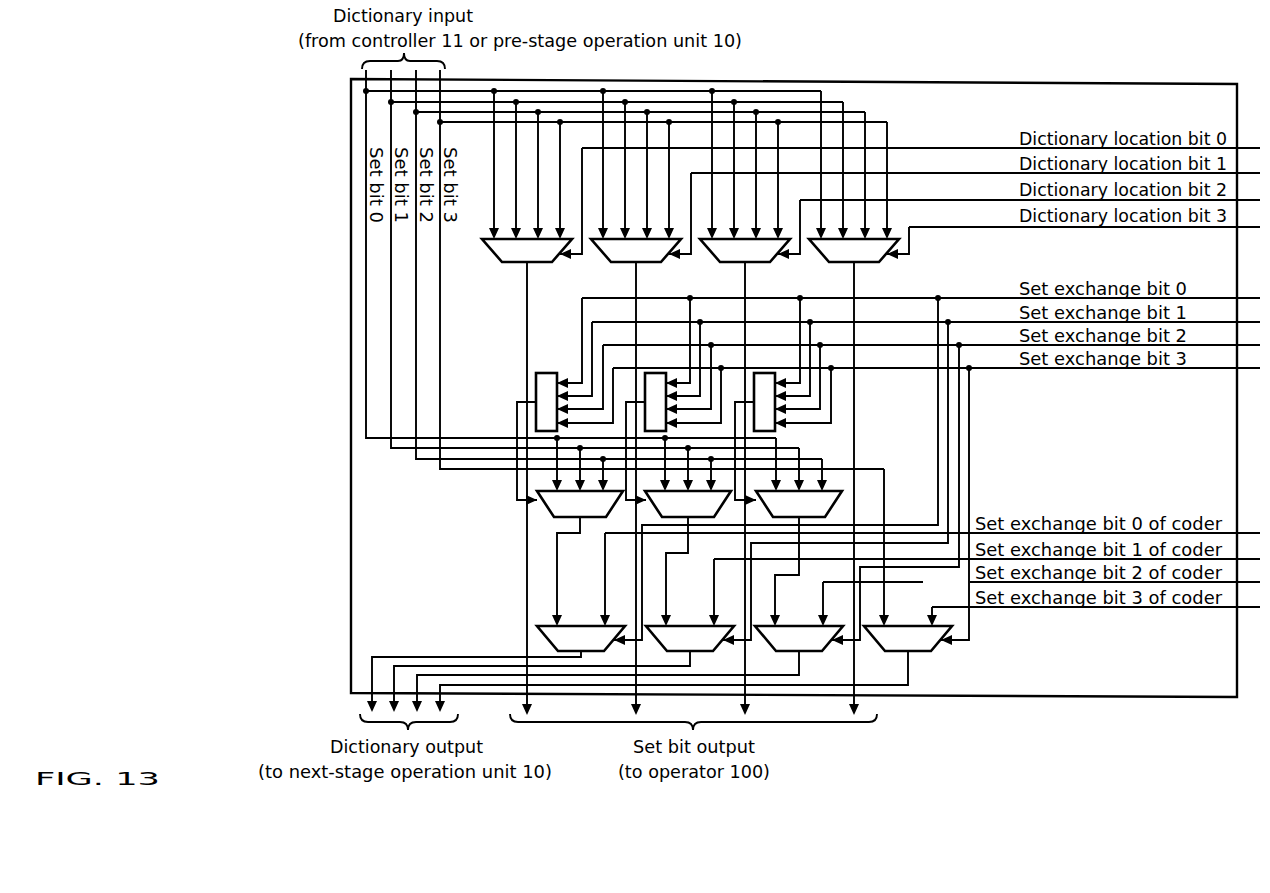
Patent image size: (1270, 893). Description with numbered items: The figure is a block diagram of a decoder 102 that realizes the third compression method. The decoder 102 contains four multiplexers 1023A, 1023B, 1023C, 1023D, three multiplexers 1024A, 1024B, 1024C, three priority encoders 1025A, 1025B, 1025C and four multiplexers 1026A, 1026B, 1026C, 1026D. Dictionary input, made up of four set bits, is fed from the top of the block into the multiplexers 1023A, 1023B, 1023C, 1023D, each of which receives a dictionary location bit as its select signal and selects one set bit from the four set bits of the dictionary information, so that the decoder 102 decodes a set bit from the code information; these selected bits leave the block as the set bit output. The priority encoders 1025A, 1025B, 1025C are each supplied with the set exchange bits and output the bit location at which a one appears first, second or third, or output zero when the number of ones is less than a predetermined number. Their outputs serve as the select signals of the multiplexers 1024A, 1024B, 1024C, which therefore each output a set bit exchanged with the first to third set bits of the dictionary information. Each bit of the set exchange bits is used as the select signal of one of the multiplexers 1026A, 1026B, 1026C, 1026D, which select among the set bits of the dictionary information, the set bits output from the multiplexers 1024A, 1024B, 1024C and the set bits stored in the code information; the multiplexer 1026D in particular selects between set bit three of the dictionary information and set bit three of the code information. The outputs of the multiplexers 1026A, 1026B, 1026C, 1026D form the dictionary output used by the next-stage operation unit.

The decoder 102 is at (959, 80).
The multiplexer 1023A is at (499, 262).
The multiplexer 1023B is at (608, 262).
The multiplexer 1023C is at (717, 262).
The multiplexer 1023D is at (826, 262).
The multiplexer 1024A is at (550, 508).
The multiplexer 1024B is at (660, 510).
The multiplexer 1024C is at (836, 490).
The priority encoder 1025A is at (536, 381).
The priority encoder 1025B is at (645, 379).
The priority encoder 1025C is at (777, 437).
The multiplexer 1026A is at (590, 655).
The multiplexer 1026B is at (699, 655).
The multiplexer 1026C is at (808, 655).
The multiplexer 1026D is at (918, 655).